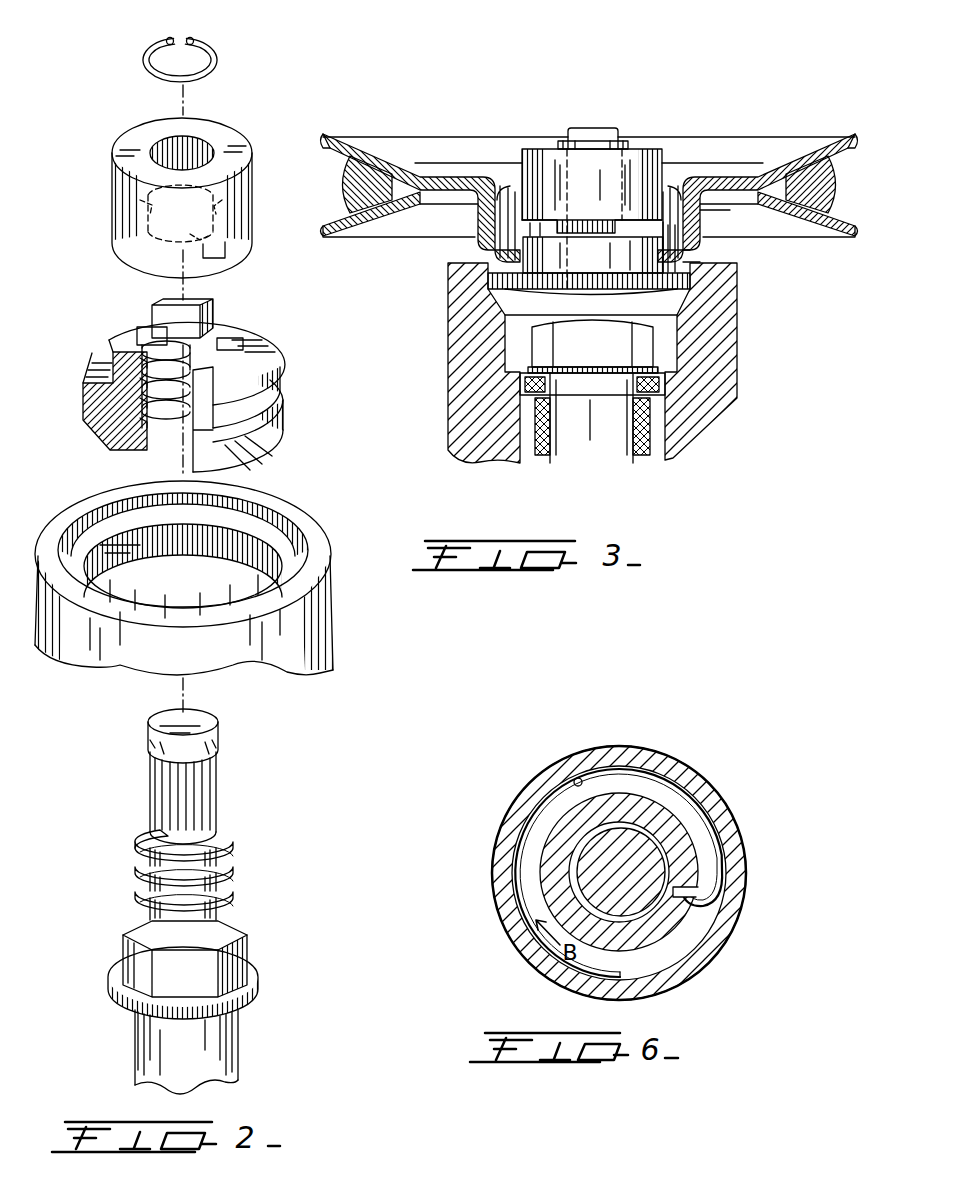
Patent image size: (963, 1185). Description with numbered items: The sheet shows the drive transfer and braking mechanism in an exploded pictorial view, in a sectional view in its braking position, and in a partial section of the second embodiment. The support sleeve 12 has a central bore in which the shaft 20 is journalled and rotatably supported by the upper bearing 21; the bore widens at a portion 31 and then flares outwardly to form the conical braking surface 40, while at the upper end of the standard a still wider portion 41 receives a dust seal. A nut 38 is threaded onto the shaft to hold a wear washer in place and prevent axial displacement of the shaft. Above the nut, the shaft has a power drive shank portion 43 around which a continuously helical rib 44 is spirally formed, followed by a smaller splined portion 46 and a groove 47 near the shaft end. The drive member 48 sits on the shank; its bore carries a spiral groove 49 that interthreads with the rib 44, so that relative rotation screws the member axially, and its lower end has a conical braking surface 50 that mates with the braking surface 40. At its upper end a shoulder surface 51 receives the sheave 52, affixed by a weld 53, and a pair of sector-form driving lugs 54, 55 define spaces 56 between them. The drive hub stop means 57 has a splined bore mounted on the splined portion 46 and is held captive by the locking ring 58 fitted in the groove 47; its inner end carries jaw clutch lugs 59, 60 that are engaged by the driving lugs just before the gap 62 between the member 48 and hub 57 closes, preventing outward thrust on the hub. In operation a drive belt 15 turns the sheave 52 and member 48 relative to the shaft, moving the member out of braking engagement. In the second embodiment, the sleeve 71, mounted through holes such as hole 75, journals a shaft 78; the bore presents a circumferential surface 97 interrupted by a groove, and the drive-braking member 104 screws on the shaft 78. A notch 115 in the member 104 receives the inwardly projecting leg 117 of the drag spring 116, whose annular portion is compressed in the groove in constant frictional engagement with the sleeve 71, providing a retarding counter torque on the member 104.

In FIG. 3, the support sleeve 12 is at (724, 334).
In FIG. 3, the drive belt 15 is at (365, 168).
In FIG. 2, the shaft 20 is at (232, 1032).
In FIG. 2, the upper bearing 21 is at (326, 598).
In FIG. 2, the widened bore portion 31 is at (210, 556).
In FIG. 2, the nut 38 is at (235, 960).
In FIG. 3, the nut 38 is at (660, 356).
In FIG. 2, the braking surface 40 is at (262, 546).
In FIG. 2, the wider bore portion 41 is at (262, 514).
In FIG. 2, the power drive shank portion 43 is at (232, 862).
In FIG. 2, the helical rib 44 is at (236, 874).
In FIG. 2, the splined portion 46 is at (206, 789).
In FIG. 2, the groove 47 is at (215, 752).
In FIG. 2, the drive member 48 is at (250, 384).
In FIG. 3, the drive member 48 is at (660, 298).
In FIG. 2, the spiral groove 49 is at (150, 416).
In FIG. 2, the conical braking surface 50 is at (242, 458).
In FIG. 2, the shoulder surface 51 is at (265, 362).
In FIG. 3, the sheave 52 is at (830, 150).
In FIG. 3, the weld 53 is at (700, 248).
In FIG. 2, the driving lug 54 is at (190, 312).
In FIG. 2, the driving lug 55 is at (196, 350).
In FIG. 2, the spaces 56 is at (140, 335).
In FIG. 2, the drive hub stop means 57 is at (196, 130).
In FIG. 3, the drive hub stop means 57 is at (640, 160).
In FIG. 2, the locking ring 58 is at (213, 60).
In FIG. 3, the locking ring 58 is at (620, 142).
In FIG. 2, the jaw clutch lug 59 is at (226, 252).
In FIG. 2, the jaw clutch lug 60 is at (230, 206).
In FIG. 3, the gap 62 is at (680, 222).
In FIG. 6, the sleeve 71 is at (620, 746).
In FIG. 6, the hole 75 is at (683, 786).
In FIG. 6, the shaft 78 is at (641, 855).
In FIG. 6, the circumferential surface 97 is at (575, 780).
In FIG. 6, the drive-braking member 104 is at (628, 822).
In FIG. 6, the notch 115 is at (702, 906).
In FIG. 6, the drag spring 116 is at (724, 814).
In FIG. 6, the leg 117 is at (700, 877).